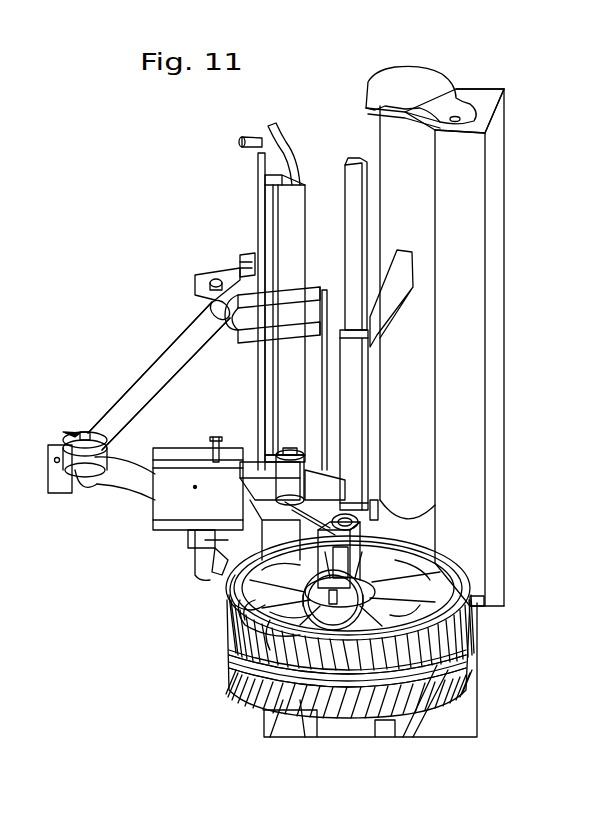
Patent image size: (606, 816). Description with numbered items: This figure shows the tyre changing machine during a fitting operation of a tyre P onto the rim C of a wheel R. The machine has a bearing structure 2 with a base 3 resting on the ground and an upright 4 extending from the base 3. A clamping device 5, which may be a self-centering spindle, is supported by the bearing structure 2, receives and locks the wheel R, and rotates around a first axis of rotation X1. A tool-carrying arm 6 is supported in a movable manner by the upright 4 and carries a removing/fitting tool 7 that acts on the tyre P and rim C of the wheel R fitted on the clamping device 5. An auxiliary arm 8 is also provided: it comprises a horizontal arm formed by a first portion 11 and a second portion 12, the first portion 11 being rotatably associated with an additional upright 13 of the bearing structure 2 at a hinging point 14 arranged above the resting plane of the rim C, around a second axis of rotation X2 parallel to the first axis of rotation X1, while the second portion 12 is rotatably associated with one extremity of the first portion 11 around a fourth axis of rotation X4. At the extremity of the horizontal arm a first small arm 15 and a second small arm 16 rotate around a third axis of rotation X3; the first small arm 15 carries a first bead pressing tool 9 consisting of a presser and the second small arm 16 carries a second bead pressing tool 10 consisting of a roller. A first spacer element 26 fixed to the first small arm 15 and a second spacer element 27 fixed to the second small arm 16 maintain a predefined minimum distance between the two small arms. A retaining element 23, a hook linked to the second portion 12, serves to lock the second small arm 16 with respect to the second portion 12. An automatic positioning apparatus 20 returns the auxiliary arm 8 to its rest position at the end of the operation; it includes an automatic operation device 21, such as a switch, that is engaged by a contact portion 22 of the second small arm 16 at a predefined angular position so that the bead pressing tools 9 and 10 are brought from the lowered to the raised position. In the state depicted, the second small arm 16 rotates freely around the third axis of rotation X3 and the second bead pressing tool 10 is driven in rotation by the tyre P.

The bearing structure 2 is at (498, 334).
The base 3 is at (462, 690).
The upright 4 is at (495, 172).
The clamping device 5 is at (450, 570).
The tool-carrying arm 6 is at (373, 388).
The removing/fitting tool 7 is at (415, 540).
The auxiliary arm 8 is at (118, 350).
The first bead pressing tool 9 is at (205, 580).
The second bead pressing tool 10 is at (300, 615).
The first portion of the horizontal arm 11 is at (168, 345).
The second portion of the horizontal arm 12 is at (115, 490).
The additional upright 13 is at (288, 214).
The hinging point 14 is at (232, 330).
The first small arm 15 is at (195, 553).
The second small arm 16 is at (405, 625).
The automatic positioning apparatus 20 is at (165, 510).
The automatic operation device 21 is at (228, 488).
The contact portion 22 is at (222, 548).
The retaining element 23 is at (260, 622).
The first spacer element 26 is at (240, 596).
The second spacer element 27 is at (275, 625).
The first axis of rotation X1 is at (378, 505).
The second axis of rotation X2 is at (230, 256).
The third axis of rotation X3 is at (305, 428).
The fourth axis of rotation X4 is at (85, 500).
The rim C is at (470, 600).
The tyre P is at (462, 652).
The wheel R is at (488, 634).